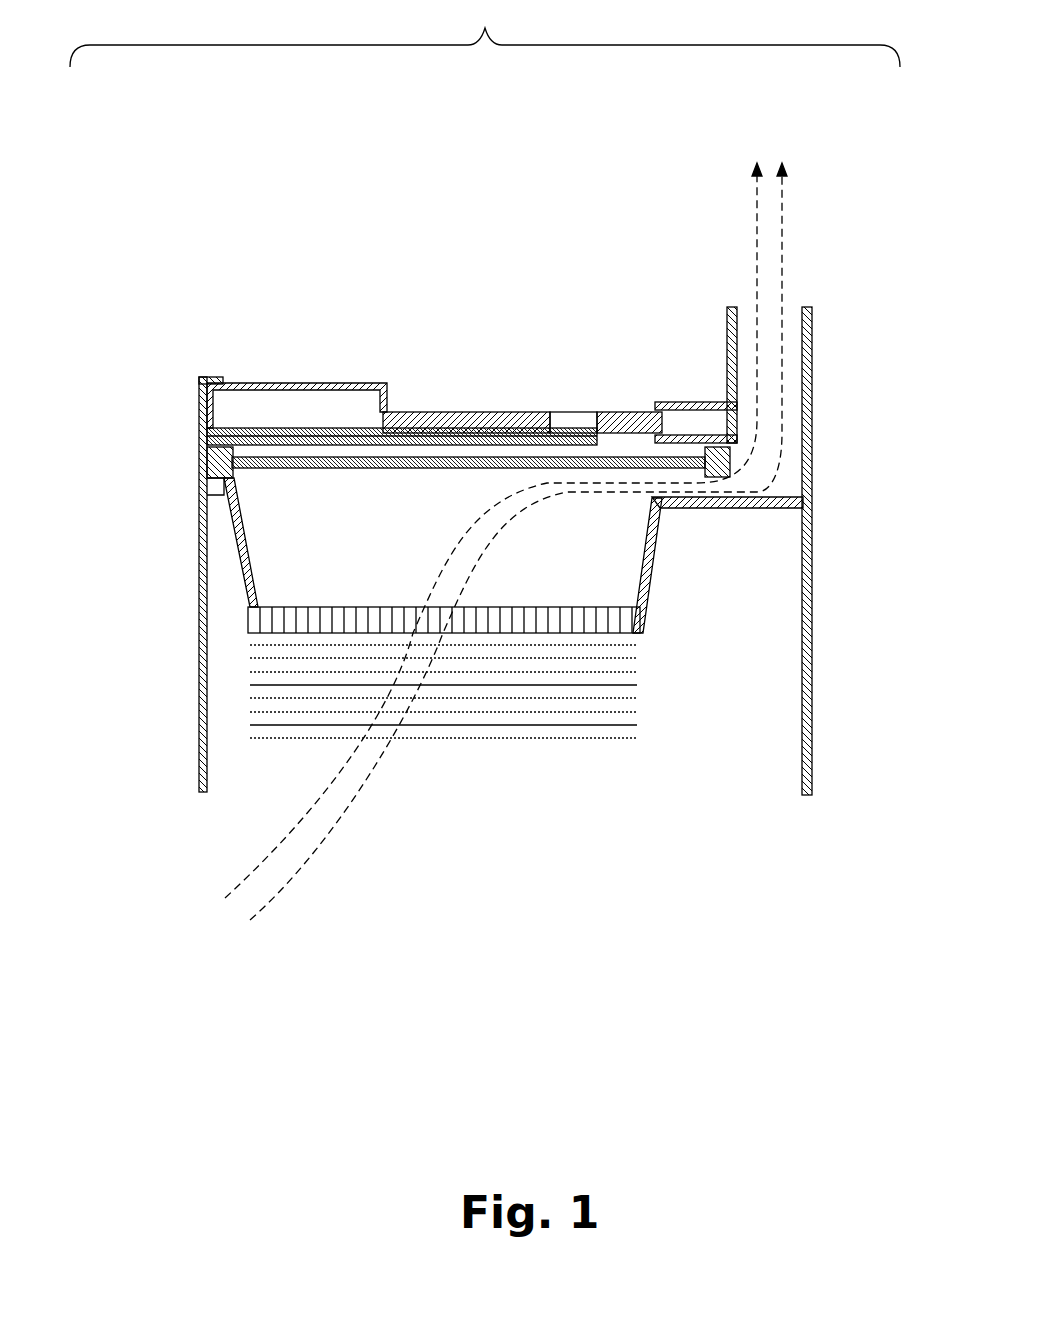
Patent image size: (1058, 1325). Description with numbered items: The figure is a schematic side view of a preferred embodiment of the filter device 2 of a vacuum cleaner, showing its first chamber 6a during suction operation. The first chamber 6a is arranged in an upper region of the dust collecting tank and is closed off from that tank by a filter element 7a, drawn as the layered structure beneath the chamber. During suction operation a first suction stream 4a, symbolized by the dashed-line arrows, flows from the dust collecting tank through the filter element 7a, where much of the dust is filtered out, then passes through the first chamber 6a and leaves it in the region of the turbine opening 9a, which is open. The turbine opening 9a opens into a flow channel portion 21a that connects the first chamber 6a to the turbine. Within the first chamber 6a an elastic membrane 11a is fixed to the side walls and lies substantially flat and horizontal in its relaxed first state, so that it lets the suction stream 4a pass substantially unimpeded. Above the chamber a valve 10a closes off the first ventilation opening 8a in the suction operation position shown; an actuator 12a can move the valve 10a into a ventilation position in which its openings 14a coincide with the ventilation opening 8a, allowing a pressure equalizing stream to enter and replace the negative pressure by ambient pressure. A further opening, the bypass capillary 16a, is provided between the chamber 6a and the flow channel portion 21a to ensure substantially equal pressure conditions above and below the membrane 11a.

The filter device 2 is at (485, 33).
The first suction stream 4a is at (208, 886).
The first chamber 6a is at (606, 565).
The filter element 7a is at (234, 718).
The first ventilation opening 8a is at (619, 438).
The turbine opening 9a is at (776, 483).
The valve 10a is at (449, 406).
The elastic membrane 11a is at (279, 477).
The actuator 12a is at (299, 370).
The openings 14a is at (556, 406).
The bypass capillary 16a is at (744, 446).
The flow channel portion 21a is at (816, 340).